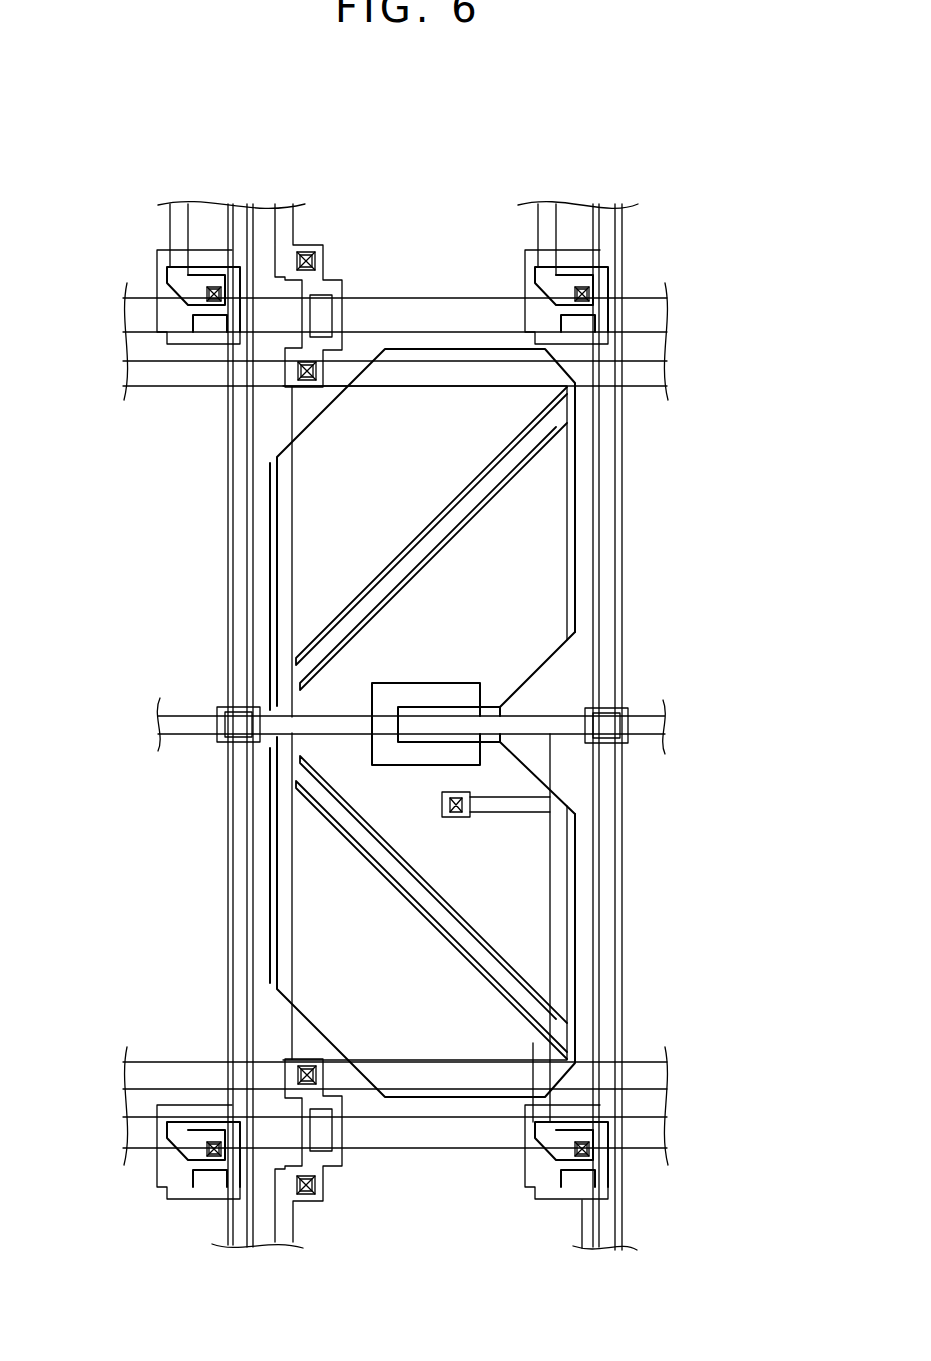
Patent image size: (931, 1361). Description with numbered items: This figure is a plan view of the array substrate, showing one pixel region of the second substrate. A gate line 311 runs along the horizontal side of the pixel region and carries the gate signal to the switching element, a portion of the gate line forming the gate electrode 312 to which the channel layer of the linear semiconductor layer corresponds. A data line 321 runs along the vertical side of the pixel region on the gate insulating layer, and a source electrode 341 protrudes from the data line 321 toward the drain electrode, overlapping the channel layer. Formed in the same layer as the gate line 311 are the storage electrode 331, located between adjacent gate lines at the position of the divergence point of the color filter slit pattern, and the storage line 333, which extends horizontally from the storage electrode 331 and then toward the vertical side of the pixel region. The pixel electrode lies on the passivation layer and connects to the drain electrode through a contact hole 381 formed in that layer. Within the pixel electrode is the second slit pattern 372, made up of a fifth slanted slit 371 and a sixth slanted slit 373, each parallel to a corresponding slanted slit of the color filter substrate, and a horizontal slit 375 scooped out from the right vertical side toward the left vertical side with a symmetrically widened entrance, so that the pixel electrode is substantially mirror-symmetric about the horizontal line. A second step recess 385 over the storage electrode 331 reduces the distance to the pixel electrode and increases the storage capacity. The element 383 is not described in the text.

The gate line 311 is at (423, 1150).
The gate electrode 312 is at (547, 1173).
The data line 321 is at (623, 557).
The storage electrode 331 is at (443, 683).
The storage line 333 is at (537, 713).
The source electrode 341 is at (567, 1128).
The fifth slanted slit 371 is at (350, 830).
The second slit pattern 372 is at (295, 723).
The sixth slanted slit 373 is at (350, 616).
The horizontal slit 375 is at (540, 762).
The contact hole 381 is at (630, 1152).
The contact hole 383 is at (457, 812).
The second step recess 385 is at (448, 720).